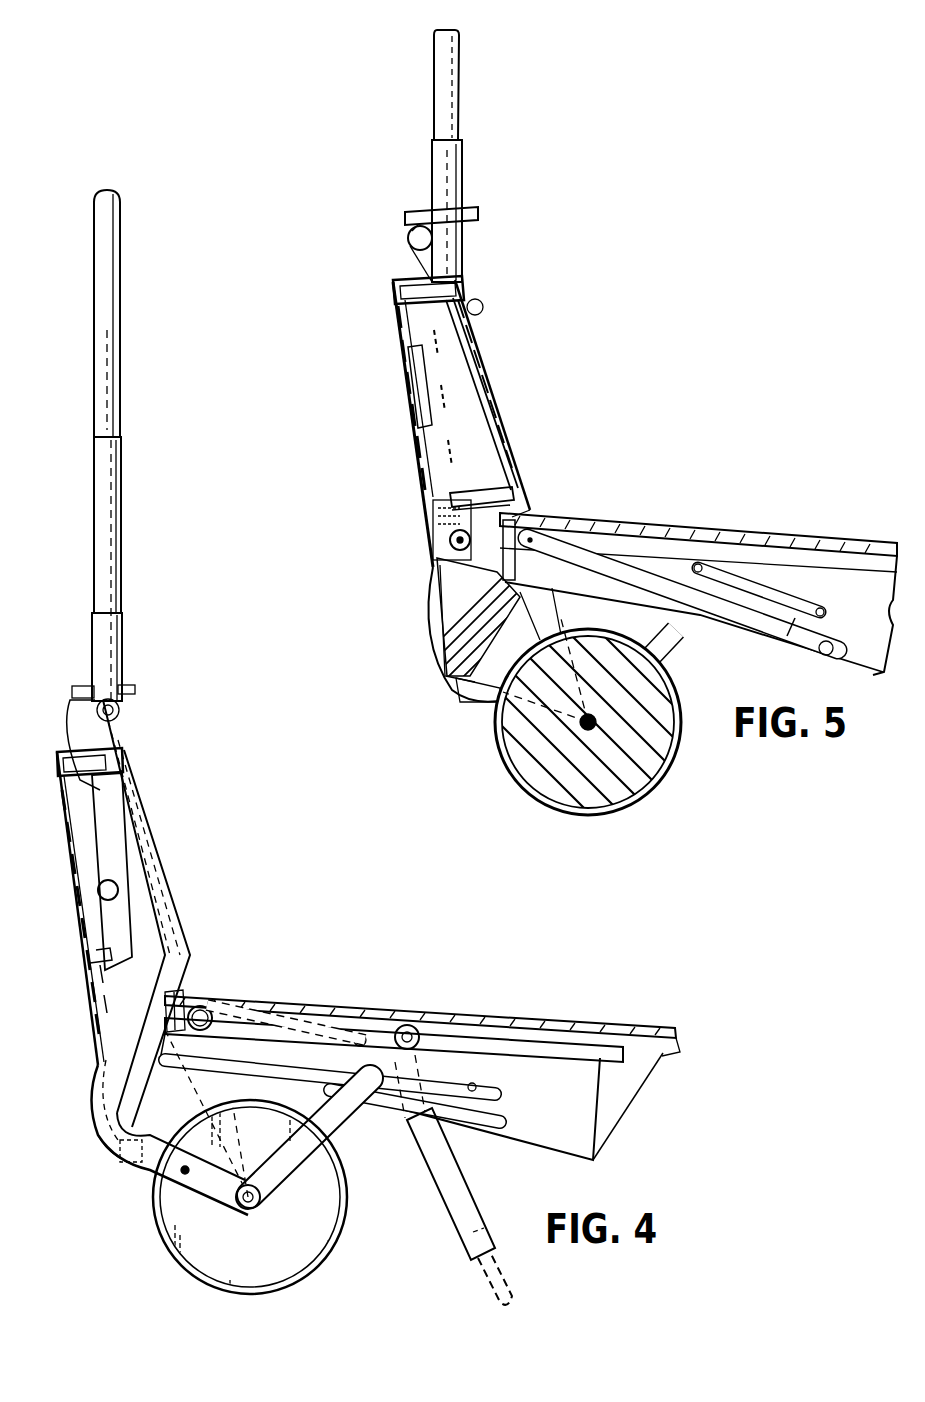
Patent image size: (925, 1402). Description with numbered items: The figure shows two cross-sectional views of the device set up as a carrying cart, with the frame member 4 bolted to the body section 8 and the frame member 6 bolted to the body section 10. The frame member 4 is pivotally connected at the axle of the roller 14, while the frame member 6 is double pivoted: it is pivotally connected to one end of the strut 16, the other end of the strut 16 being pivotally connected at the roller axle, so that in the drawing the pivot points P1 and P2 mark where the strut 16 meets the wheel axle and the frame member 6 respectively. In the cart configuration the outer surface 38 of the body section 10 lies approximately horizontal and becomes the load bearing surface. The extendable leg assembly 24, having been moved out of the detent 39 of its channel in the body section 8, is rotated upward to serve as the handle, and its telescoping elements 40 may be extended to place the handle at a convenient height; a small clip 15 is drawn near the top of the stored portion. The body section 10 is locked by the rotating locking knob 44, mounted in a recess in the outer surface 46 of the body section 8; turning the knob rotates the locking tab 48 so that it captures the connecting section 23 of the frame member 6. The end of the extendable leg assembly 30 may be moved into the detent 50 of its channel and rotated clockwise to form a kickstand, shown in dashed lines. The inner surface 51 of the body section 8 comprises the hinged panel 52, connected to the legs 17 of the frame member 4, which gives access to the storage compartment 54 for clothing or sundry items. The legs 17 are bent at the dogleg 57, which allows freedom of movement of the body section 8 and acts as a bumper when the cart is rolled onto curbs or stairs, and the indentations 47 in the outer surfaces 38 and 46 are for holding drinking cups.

In FIG. 4, the frame member 4 is at (96, 1066).
In FIG. 5, the frame member 6 is at (440, 588).
In FIG. 4, the frame member 6 is at (543, 1068).
In FIG. 5, the body section 8 is at (390, 300).
In FIG. 4, the body section 8 is at (62, 857).
In FIG. 5, the body section 10 is at (780, 534).
In FIG. 4, the body section 10 is at (499, 1010).
In FIG. 5, the roller 14 is at (640, 792).
In FIG. 4, the roller 14 is at (326, 1256).
In FIG. 4, the clip 15 is at (74, 690).
In FIG. 5, the strut 16 is at (672, 650).
In FIG. 4, the strut 16 is at (340, 1120).
In FIG. 4, the legs 17 is at (120, 1034).
In FIG. 5, the connecting section 23 is at (446, 548).
In FIG. 5, the extendable leg assembly 24 is at (456, 177).
In FIG. 4, the extendable leg assembly 24 is at (120, 417).
In FIG. 5, the extendable leg assembly 30 is at (779, 648).
In FIG. 4, the extendable leg assembly 30 is at (470, 1226).
In FIG. 5, the outer surface 38 is at (691, 521).
In FIG. 4, the detent 39 is at (76, 806).
In FIG. 4, the telescoping elements 40 is at (96, 388).
In FIG. 5, the rotating locking knob 44 is at (431, 543).
In FIG. 5, the outer surface 46 is at (421, 462).
In FIG. 4, the outer surface 46 is at (84, 940).
In FIG. 5, the indentations 47 is at (408, 394).
In FIG. 5, the locking tab 48 is at (503, 520).
In FIG. 4, the detent 50 is at (345, 1030).
In FIG. 5, the inner surface 51 is at (482, 381).
In FIG. 5, the hinged panel 52 is at (480, 342).
In FIG. 5, the storage compartment 54 is at (423, 321).
In FIG. 4, the dogleg 57 is at (92, 1128).
In FIG. 4, the wheel pivot P1 is at (248, 1208).
In FIG. 4, the link pivot P2 is at (410, 1024).